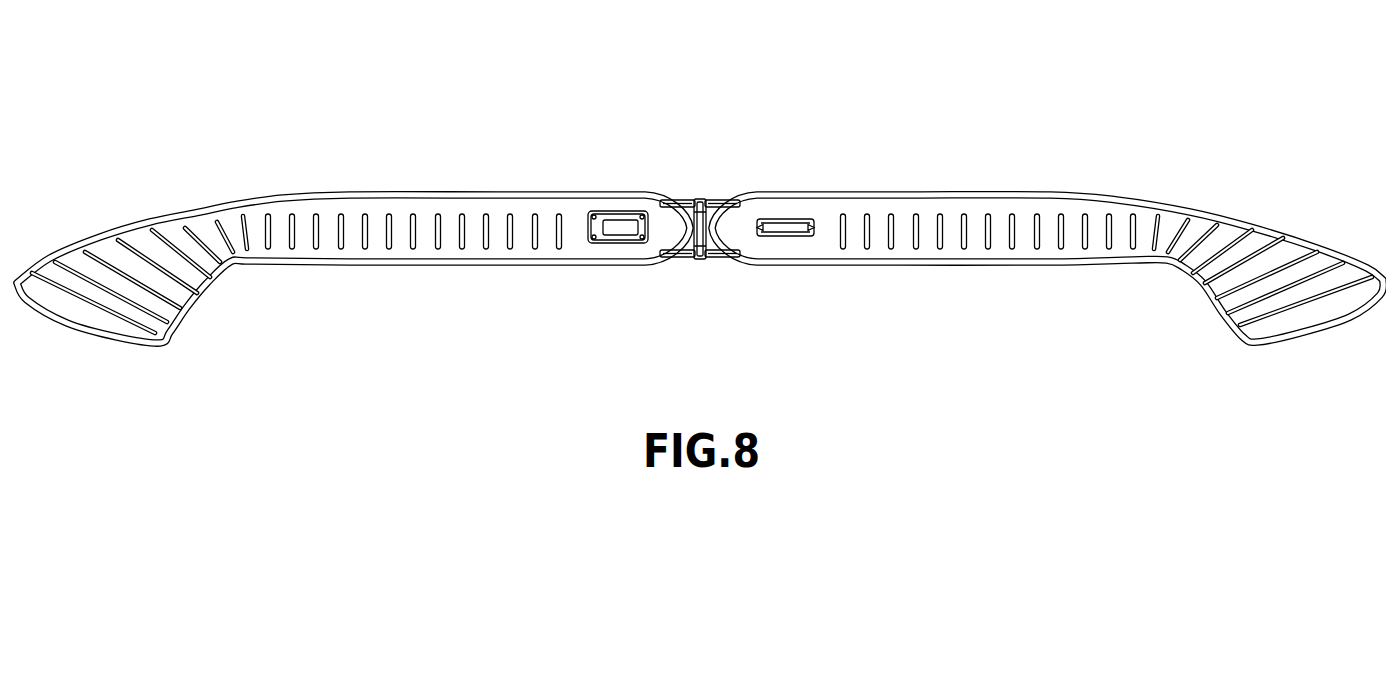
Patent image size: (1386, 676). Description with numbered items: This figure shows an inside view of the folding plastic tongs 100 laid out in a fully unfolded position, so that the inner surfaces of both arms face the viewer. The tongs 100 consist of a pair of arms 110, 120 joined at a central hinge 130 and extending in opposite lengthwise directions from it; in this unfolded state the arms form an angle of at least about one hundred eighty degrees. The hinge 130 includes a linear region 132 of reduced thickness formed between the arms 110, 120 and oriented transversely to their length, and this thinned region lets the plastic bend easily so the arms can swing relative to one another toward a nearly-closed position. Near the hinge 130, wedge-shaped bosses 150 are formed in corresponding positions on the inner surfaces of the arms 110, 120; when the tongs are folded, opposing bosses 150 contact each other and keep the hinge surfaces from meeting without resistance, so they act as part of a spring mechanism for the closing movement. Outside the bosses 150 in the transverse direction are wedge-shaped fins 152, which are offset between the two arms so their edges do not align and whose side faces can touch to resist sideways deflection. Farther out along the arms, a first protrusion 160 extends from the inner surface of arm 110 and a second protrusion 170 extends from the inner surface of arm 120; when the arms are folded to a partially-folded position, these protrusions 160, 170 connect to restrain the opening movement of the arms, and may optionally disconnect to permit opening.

The folding plastic tongs 100 is at (700, 197).
The arm 110 is at (985, 195).
The arm 120 is at (447, 197).
The hinge 130 is at (703, 258).
The linear region 132 is at (703, 203).
The wedge-shaped bosses 150 is at (714, 206).
The wedge-shaped fins 152 is at (673, 201).
The first protrusion 160 is at (790, 235).
The second protrusion 170 is at (615, 234).